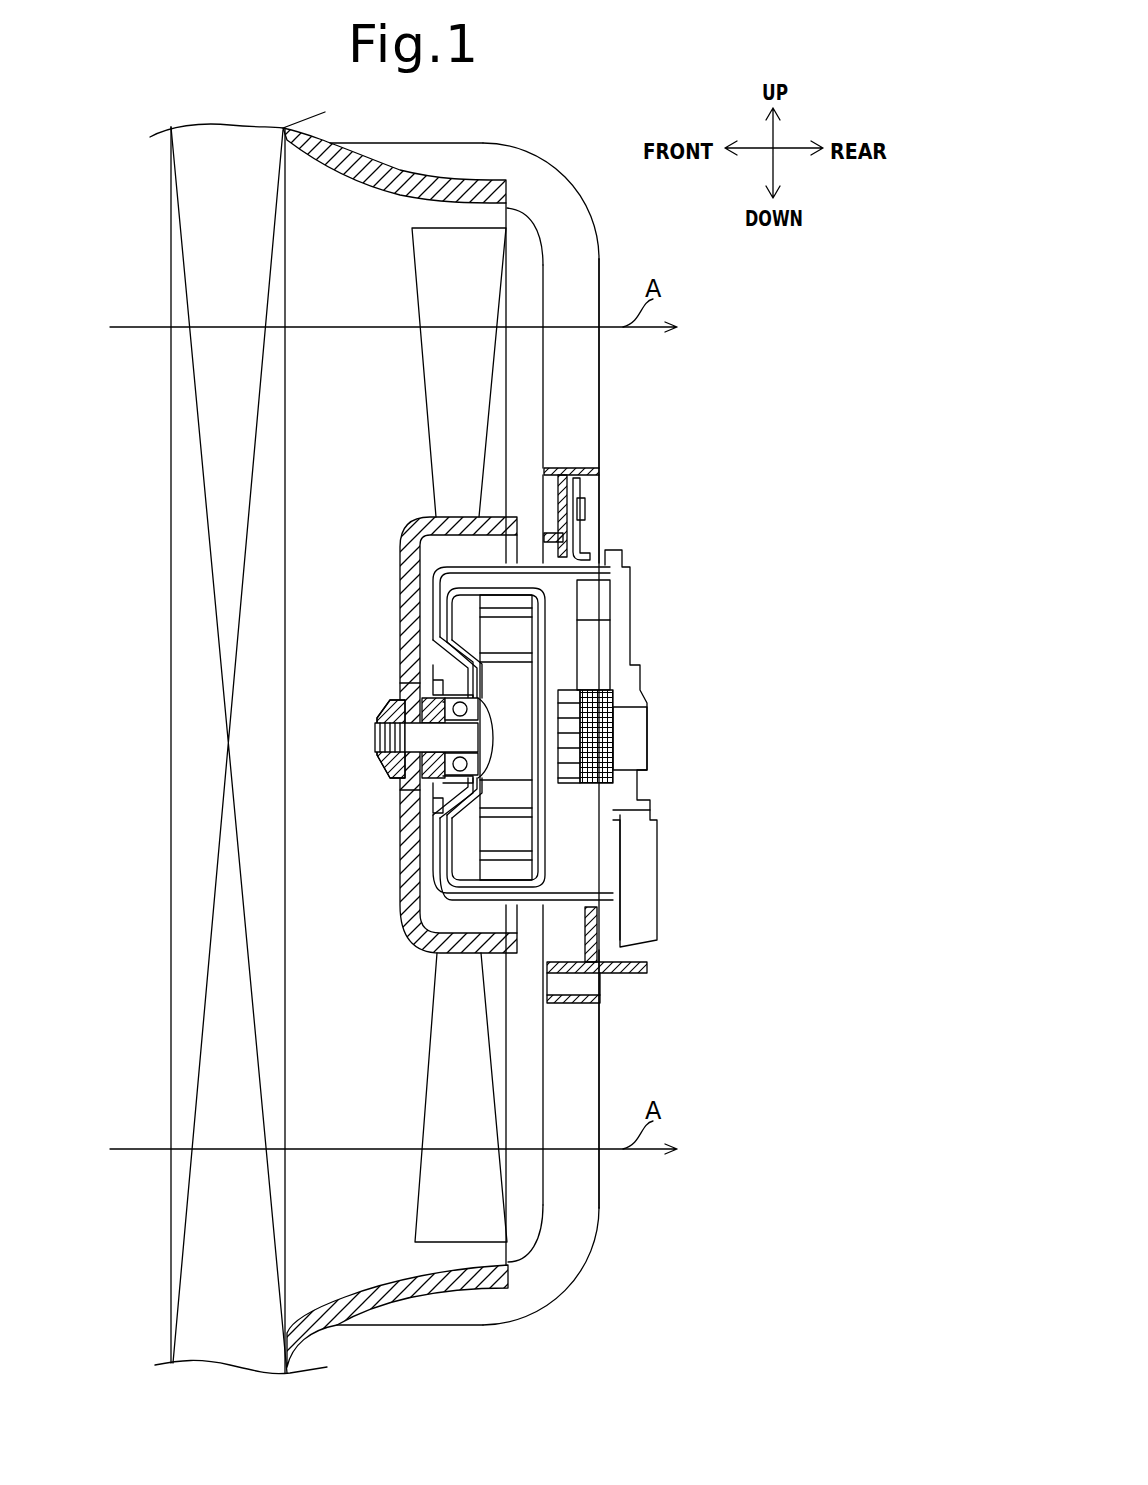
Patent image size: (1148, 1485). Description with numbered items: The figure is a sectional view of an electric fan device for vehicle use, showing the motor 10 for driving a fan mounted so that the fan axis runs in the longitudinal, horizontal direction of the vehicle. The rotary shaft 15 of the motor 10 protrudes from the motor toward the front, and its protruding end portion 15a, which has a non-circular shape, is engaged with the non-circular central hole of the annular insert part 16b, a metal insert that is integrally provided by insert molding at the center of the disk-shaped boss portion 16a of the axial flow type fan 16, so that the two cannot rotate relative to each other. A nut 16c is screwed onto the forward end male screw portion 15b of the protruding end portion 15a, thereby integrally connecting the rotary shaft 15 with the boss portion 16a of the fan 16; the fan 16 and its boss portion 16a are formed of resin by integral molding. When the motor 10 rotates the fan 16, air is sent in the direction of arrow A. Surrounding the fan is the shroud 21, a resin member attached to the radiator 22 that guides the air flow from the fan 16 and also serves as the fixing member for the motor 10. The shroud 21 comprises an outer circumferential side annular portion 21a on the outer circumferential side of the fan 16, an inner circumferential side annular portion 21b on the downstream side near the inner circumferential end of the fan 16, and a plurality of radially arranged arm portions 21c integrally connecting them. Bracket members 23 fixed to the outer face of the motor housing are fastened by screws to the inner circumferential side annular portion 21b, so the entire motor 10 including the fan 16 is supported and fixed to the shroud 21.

The motor 10 is at (638, 556).
The rotary shaft 15 is at (455, 735).
The protruding end portion 15a is at (377, 766).
The forward end male screw portion 15b is at (368, 731).
The axial flow type fan 16 is at (460, 287).
The disk-shaped boss portion 16a is at (400, 571).
The annular insert part 16b is at (393, 687).
The nut 16c is at (385, 701).
The shroud 21 is at (420, 135).
The outer circumferential side annular portion 21a is at (470, 180).
The inner circumferential side annular portion 21b is at (563, 473).
The arm portions 21c is at (563, 217).
The radiator 22 is at (190, 852).
The bracket members 23 is at (580, 533).